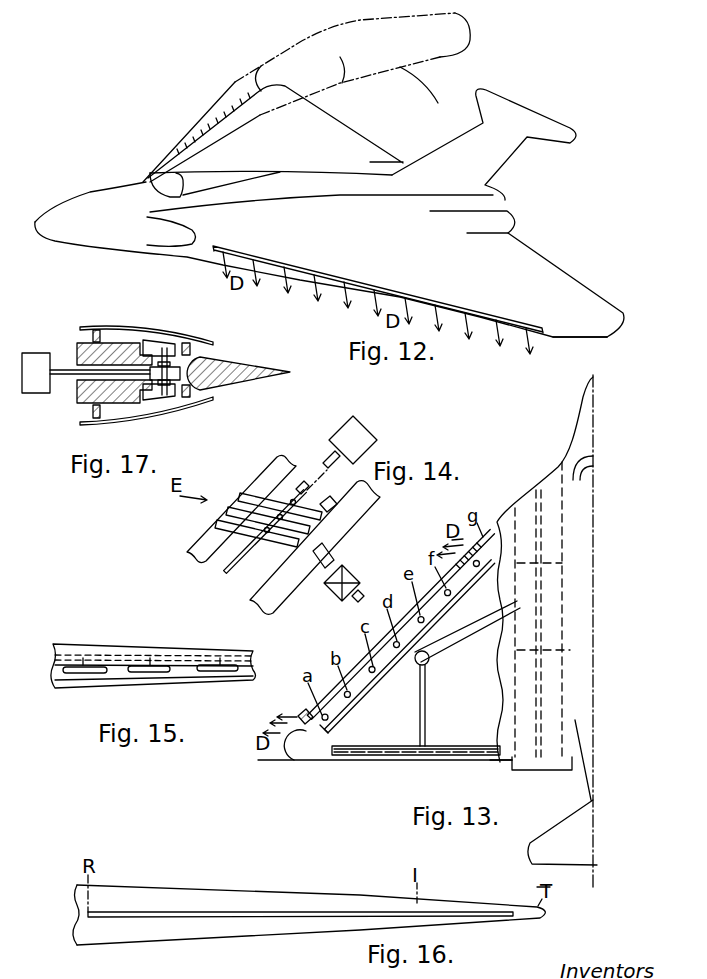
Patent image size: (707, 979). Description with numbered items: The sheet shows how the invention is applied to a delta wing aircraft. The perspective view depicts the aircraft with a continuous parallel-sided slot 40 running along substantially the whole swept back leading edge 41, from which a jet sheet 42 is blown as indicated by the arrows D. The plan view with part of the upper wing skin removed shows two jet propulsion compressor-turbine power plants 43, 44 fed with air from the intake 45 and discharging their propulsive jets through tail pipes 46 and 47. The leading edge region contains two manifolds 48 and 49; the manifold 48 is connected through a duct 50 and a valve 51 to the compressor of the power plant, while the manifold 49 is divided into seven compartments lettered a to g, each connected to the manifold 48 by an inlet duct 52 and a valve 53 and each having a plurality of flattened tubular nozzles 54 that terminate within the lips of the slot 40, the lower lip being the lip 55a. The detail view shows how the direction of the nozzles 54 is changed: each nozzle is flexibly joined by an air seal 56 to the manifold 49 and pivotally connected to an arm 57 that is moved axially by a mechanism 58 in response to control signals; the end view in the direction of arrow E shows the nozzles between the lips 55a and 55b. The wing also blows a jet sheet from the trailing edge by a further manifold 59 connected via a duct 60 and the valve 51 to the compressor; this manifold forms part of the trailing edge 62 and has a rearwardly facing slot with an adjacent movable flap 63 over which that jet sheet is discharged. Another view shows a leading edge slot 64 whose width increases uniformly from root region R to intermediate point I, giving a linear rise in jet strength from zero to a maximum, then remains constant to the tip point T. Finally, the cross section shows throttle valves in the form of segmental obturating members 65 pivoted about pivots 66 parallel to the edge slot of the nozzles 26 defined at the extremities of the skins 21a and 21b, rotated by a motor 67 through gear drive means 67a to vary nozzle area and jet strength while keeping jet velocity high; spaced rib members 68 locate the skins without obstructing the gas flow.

In FIG. 12, the slot 40 is at (332, 277).
In FIG. 12, the swept back leading edge 41 is at (556, 336).
In FIG. 12, the jet sheet 42 is at (236, 82).
In FIG. 13, the jet propulsion compressor-turbine power plant 43 is at (533, 627).
In FIG. 13, the jet propulsion compressor-turbine power plant 44 is at (553, 609).
In FIG. 13, the intake 45 is at (535, 493).
In FIG. 13, the tail pipe 46 is at (521, 770).
In FIG. 13, the tail pipe 47 is at (556, 770).
In FIG. 13, the manifold 48 is at (370, 690).
In FIG. 14, the manifold 49 is at (337, 548).
In FIG. 13, the manifold 49 is at (363, 657).
In FIG. 13, the duct 50 is at (468, 626).
In FIG. 13, the valve 51 is at (429, 662).
In FIG. 14, the inlet duct 52 is at (320, 575).
In FIG. 13, the inlet duct 52 is at (300, 738).
In FIG. 14, the valve 53 is at (338, 597).
In FIG. 13, the valve 53 is at (323, 726).
In FIG. 14, the flattened tubular nozzle 54 is at (257, 495).
In FIG. 13, the flattened tubular nozzle 54 is at (303, 712).
In FIG. 15, the flattened tubular nozzle 54 is at (202, 673).
In FIG. 14, the lower lip of the slot 55a is at (198, 543).
In FIG. 13, the lower lip of the slot 55a is at (433, 587).
In FIG. 15, the lower lip of the slot 55a is at (115, 677).
In FIG. 15, the lip of the slot 55b is at (118, 663).
In FIG. 14, the air seal 56 is at (330, 507).
In FIG. 14, the arm 57 is at (297, 493).
In FIG. 15, the arm 57 is at (182, 657).
In FIG. 14, the mechanism 58 is at (365, 456).
In FIG. 13, the further manifold 59 is at (398, 750).
In FIG. 13, the duct 60 is at (426, 715).
In FIG. 13, the trailing edge 62 is at (455, 758).
In FIG. 13, the movable flap 63 is at (360, 758).
In FIG. 16, the slot 64 is at (305, 917).
In FIG. 17, the obturating member 65 is at (153, 346).
In FIG. 17, the pivot 66 is at (188, 342).
In FIG. 17, the motor 67 is at (33, 362).
In FIG. 17, the gear drive means 67a is at (243, 426).
In FIG. 17, the rib member 68 is at (93, 336).
In FIG. 17, the skin 21a is at (117, 321).
In FIG. 17, the skin 21b is at (118, 423).
In FIG. 17, the nozzle 26 is at (214, 347).